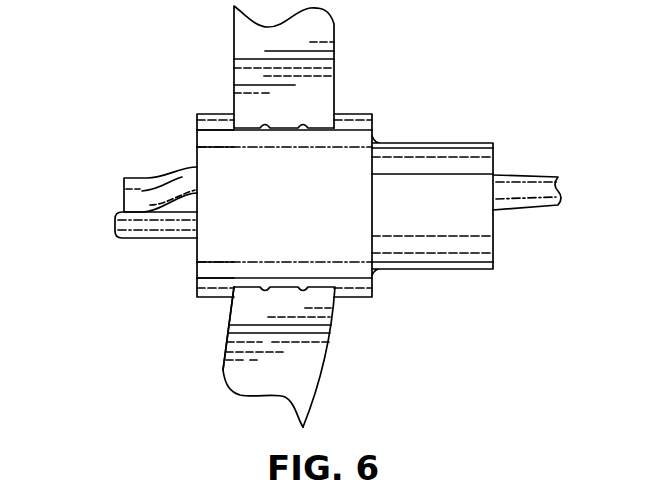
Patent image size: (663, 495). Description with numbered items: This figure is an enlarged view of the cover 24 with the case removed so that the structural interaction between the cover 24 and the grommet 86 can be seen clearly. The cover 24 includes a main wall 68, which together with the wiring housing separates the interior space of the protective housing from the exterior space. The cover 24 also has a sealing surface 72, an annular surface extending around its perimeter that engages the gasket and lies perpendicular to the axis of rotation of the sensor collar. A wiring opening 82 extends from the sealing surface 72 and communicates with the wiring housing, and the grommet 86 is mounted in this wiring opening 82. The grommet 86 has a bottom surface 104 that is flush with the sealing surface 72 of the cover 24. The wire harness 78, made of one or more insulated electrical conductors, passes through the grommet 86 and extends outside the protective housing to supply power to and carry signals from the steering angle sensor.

The cover 24 is at (346, 74).
The wiring opening 82 is at (318, 128).
The bottom surface 104 is at (206, 150).
The grommet 86 is at (199, 262).
The wire harness 78 is at (118, 223).
The main wall 68 is at (320, 355).
The sealing surface 72 is at (228, 372).